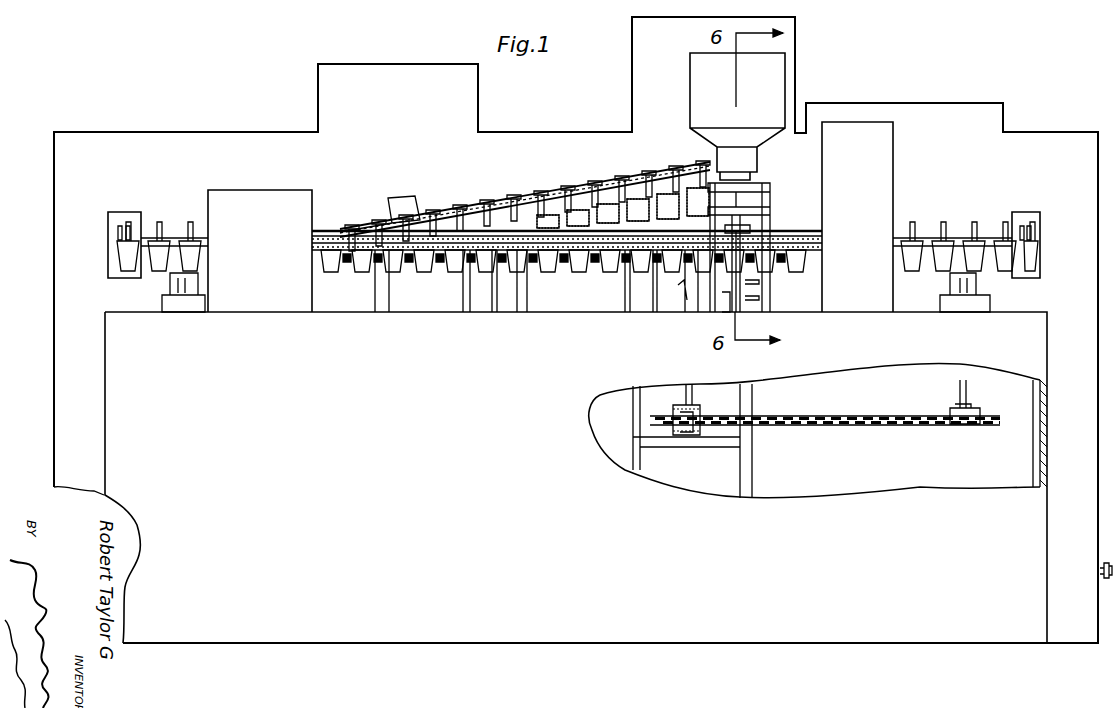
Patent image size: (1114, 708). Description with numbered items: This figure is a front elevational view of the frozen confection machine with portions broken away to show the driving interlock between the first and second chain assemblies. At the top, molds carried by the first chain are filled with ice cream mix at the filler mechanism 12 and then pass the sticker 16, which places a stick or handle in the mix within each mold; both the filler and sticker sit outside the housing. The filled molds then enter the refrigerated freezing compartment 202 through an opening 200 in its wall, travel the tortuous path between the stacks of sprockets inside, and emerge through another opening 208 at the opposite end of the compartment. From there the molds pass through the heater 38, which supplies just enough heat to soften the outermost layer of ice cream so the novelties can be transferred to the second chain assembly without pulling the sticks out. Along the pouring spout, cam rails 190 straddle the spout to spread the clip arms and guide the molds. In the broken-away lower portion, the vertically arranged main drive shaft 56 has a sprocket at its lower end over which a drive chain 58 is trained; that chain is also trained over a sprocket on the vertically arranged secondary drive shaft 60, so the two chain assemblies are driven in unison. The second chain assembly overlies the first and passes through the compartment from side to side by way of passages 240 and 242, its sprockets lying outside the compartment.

The filler mechanism 12 is at (790, 80).
The sticker 16 is at (886, 206).
The heater 38 is at (297, 188).
The main drive shaft 56 is at (952, 393).
The drive chain 58 is at (862, 428).
The secondary drive shaft 60 is at (688, 400).
The cam rails 190 is at (541, 205).
The opening 200 is at (1035, 216).
The freezing compartment 202 is at (1047, 128).
The opening 208 is at (108, 222).
The passage 240 is at (415, 196).
The passage 242 is at (697, 160).